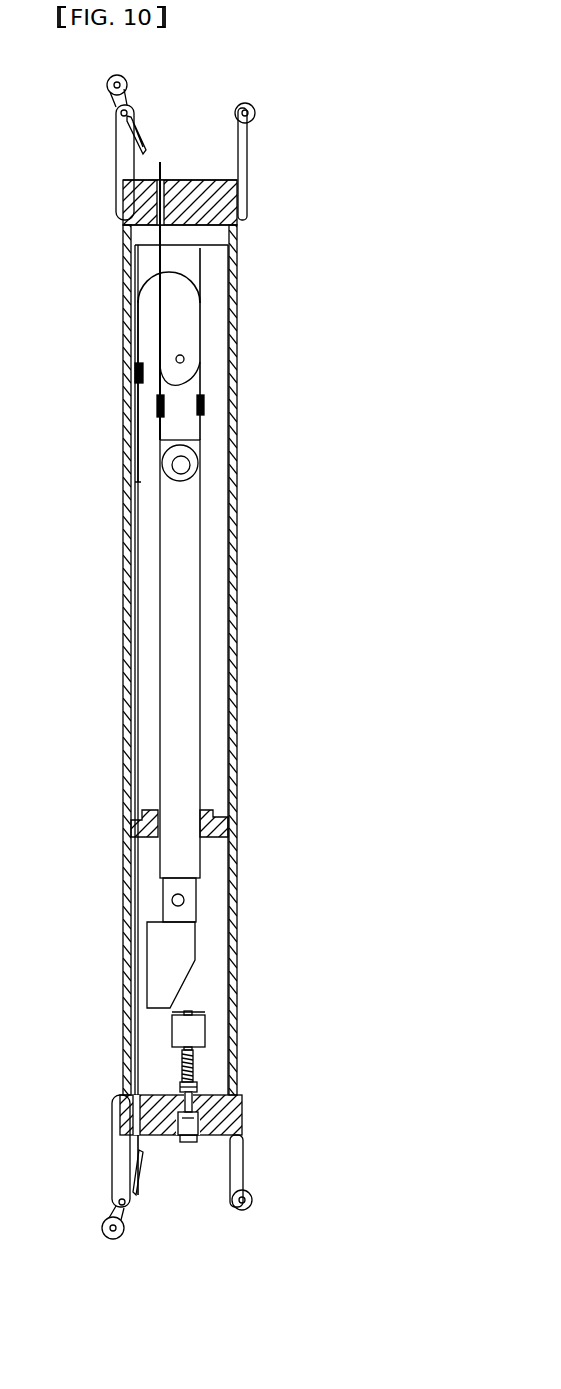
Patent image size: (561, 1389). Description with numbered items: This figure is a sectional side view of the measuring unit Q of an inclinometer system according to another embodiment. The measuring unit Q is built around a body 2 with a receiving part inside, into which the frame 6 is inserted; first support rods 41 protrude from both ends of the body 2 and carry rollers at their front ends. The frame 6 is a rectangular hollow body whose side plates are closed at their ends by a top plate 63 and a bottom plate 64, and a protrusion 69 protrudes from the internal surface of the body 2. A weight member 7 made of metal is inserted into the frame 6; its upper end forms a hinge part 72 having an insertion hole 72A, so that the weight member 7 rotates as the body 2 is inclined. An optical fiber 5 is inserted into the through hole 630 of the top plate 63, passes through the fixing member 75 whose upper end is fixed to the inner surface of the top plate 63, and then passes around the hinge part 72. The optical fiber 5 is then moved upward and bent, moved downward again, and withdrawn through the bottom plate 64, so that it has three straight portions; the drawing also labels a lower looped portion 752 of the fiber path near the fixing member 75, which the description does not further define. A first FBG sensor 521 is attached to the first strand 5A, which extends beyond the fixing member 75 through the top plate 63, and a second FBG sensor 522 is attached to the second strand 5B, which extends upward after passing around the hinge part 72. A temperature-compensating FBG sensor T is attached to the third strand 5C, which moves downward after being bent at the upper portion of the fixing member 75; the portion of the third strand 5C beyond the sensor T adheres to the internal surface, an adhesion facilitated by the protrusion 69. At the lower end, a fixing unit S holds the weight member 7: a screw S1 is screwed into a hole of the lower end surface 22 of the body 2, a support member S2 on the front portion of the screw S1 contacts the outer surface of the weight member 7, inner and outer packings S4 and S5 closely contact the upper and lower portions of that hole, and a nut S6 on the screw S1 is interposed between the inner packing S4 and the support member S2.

The optical fiber 5 is at (163, 164).
The through hole 630 is at (160, 207).
The top plate 63 is at (236, 190).
The measuring unit Q is at (346, 254).
The fixing member 75 is at (193, 263).
The lower loop portion 752 is at (183, 382).
The temperature-compensating FBG sensor T is at (135, 372).
The first FBG sensor 521 is at (157, 408).
The second FBG sensor 522 is at (204, 405).
The first strand 5A is at (158, 432).
The second strand 5B is at (202, 432).
The third strand 5C is at (144, 461).
The hinge part 72 is at (197, 462).
The insertion hole 72A is at (186, 469).
The protrusion 69 is at (133, 545).
The body 2 is at (127, 700).
The bottom plate 64 is at (215, 823).
The frame 6 is at (216, 840).
The weight member 7 is at (188, 942).
The support member S2 is at (200, 1025).
The fixing unit S is at (168, 1051).
The screw S1 is at (193, 1065).
The nut S6 is at (197, 1085).
The lower end surface 22 is at (128, 1120).
The inner packing S4 is at (200, 1090).
The outer packing S5 is at (177, 1127).
The first support rod 41 is at (243, 1175).